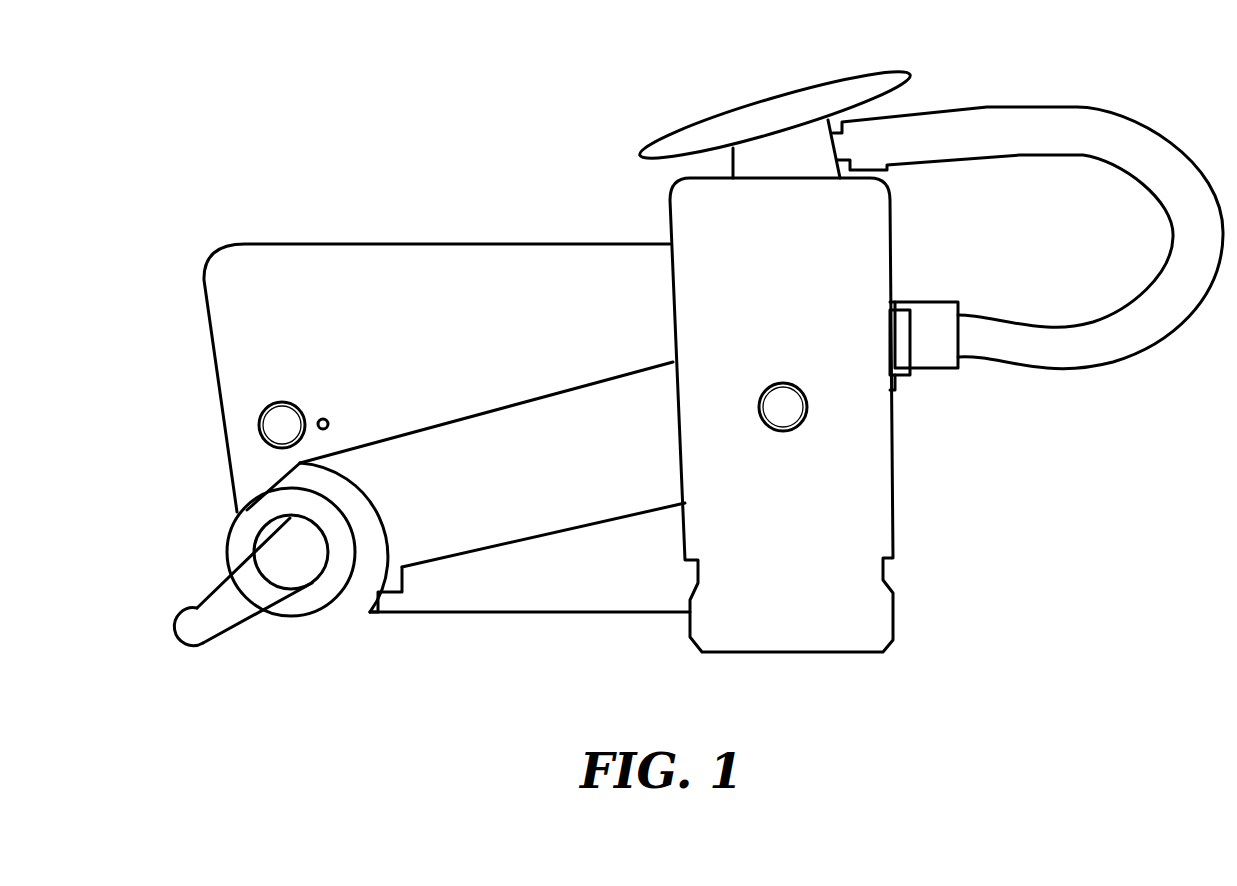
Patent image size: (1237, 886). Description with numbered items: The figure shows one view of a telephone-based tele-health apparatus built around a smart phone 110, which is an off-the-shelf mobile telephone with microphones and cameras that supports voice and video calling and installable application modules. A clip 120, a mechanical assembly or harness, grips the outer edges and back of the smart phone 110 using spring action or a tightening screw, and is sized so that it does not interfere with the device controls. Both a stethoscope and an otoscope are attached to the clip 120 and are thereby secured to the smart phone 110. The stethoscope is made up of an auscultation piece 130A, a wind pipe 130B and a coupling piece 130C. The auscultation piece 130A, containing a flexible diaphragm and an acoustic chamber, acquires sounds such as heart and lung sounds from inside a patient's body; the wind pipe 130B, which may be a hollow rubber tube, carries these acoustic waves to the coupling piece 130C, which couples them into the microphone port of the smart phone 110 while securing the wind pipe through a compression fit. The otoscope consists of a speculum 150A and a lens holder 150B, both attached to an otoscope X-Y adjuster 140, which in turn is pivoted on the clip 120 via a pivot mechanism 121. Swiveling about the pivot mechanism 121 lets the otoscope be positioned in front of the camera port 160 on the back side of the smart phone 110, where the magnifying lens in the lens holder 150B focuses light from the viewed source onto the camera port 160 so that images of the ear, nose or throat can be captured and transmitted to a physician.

The smart phone 110 is at (222, 313).
The clip 120 is at (891, 543).
The pivot mechanism 121 is at (780, 433).
The auscultation piece 130A is at (797, 90).
The wind pipe 130B is at (1062, 108).
The coupling piece 130C is at (920, 368).
The otoscope X-Y adjuster 140 is at (543, 397).
The speculum 150A is at (200, 616).
The lens holder 150B is at (245, 517).
The camera port 160 is at (283, 402).